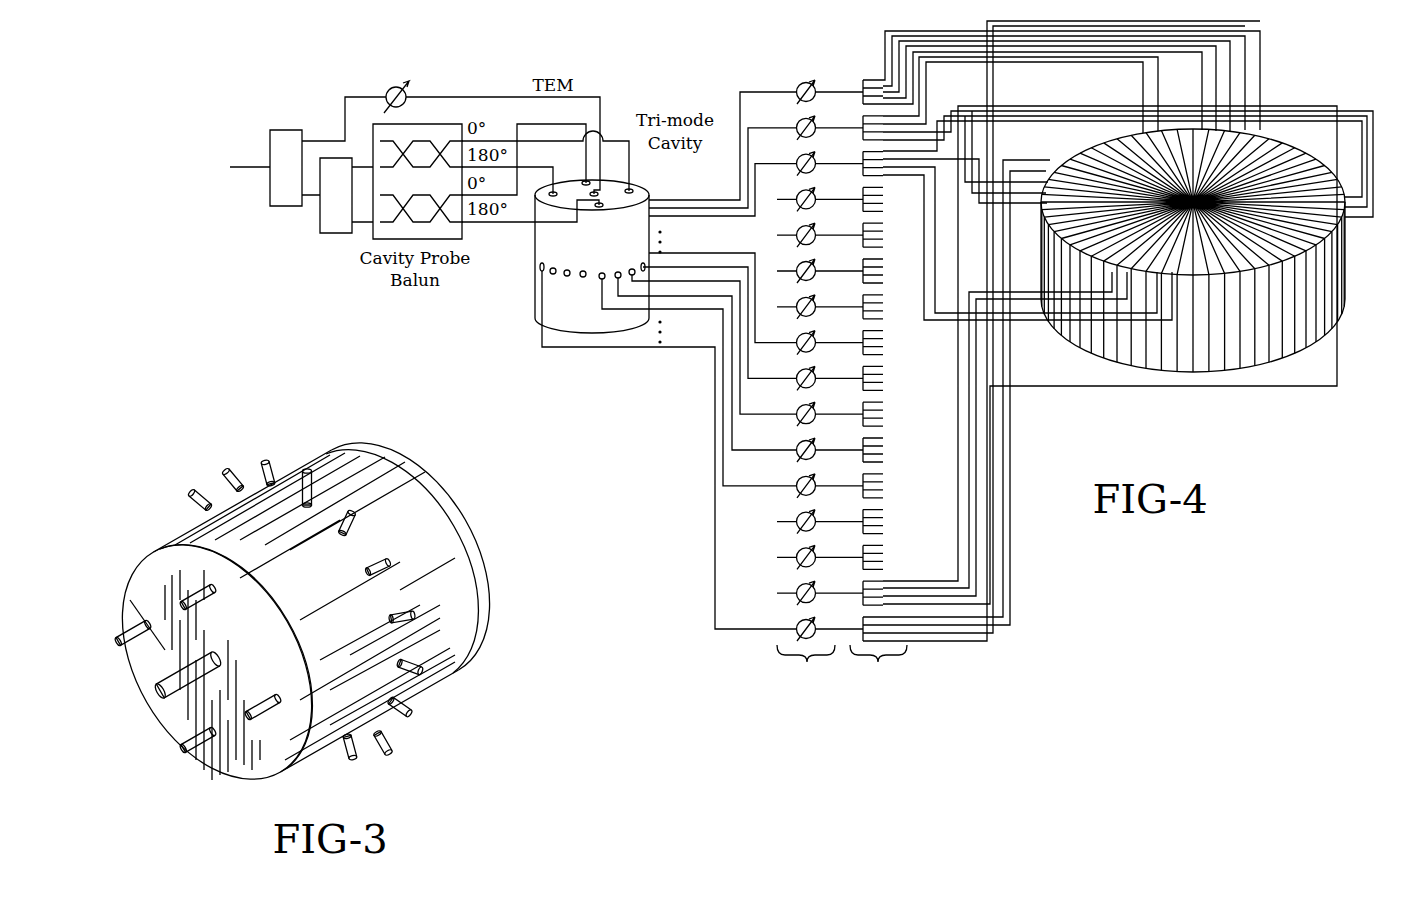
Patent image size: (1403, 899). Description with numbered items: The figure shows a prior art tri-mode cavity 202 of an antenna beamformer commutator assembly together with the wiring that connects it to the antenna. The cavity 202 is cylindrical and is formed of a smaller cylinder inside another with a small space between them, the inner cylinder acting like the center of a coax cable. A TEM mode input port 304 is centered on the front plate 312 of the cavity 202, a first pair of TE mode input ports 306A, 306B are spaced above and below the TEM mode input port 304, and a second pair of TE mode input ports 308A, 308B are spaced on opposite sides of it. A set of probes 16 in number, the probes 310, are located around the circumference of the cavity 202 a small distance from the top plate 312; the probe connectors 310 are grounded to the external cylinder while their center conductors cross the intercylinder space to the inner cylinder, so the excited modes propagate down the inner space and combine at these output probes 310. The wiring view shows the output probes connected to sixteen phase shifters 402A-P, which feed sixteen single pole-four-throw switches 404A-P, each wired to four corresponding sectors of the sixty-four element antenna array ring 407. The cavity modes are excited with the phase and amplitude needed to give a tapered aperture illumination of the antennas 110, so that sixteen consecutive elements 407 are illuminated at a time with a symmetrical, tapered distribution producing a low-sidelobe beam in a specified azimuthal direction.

In FIG. 4, the tri-mode cavity 202 is at (529, 267).
In FIG. 3, the tri-mode cavity 202 is at (451, 478).
In FIG. 4, the cavity probes 16 is at (614, 288).
In FIG. 4, the phase shifters 402A-P is at (747, 390).
In FIG. 4, the single pole-four-throw switches 404A-P is at (932, 390).
In FIG. 4, the antenna array 407 is at (1105, 374).
In FIG. 4, the antennas 110 is at (1295, 375).
In FIG. 3, the TEM mode input port 304 is at (162, 690).
In FIG. 3, the TE mode input port 306A is at (212, 592).
In FIG. 3, the TE mode input port 306B is at (186, 752).
In FIG. 3, the TE mode input port 308A is at (263, 698).
In FIG. 3, the TE mode input port 308B is at (124, 638).
In FIG. 3, the probes 310 is at (204, 494).
In FIG. 3, the front plate 312 is at (135, 588).